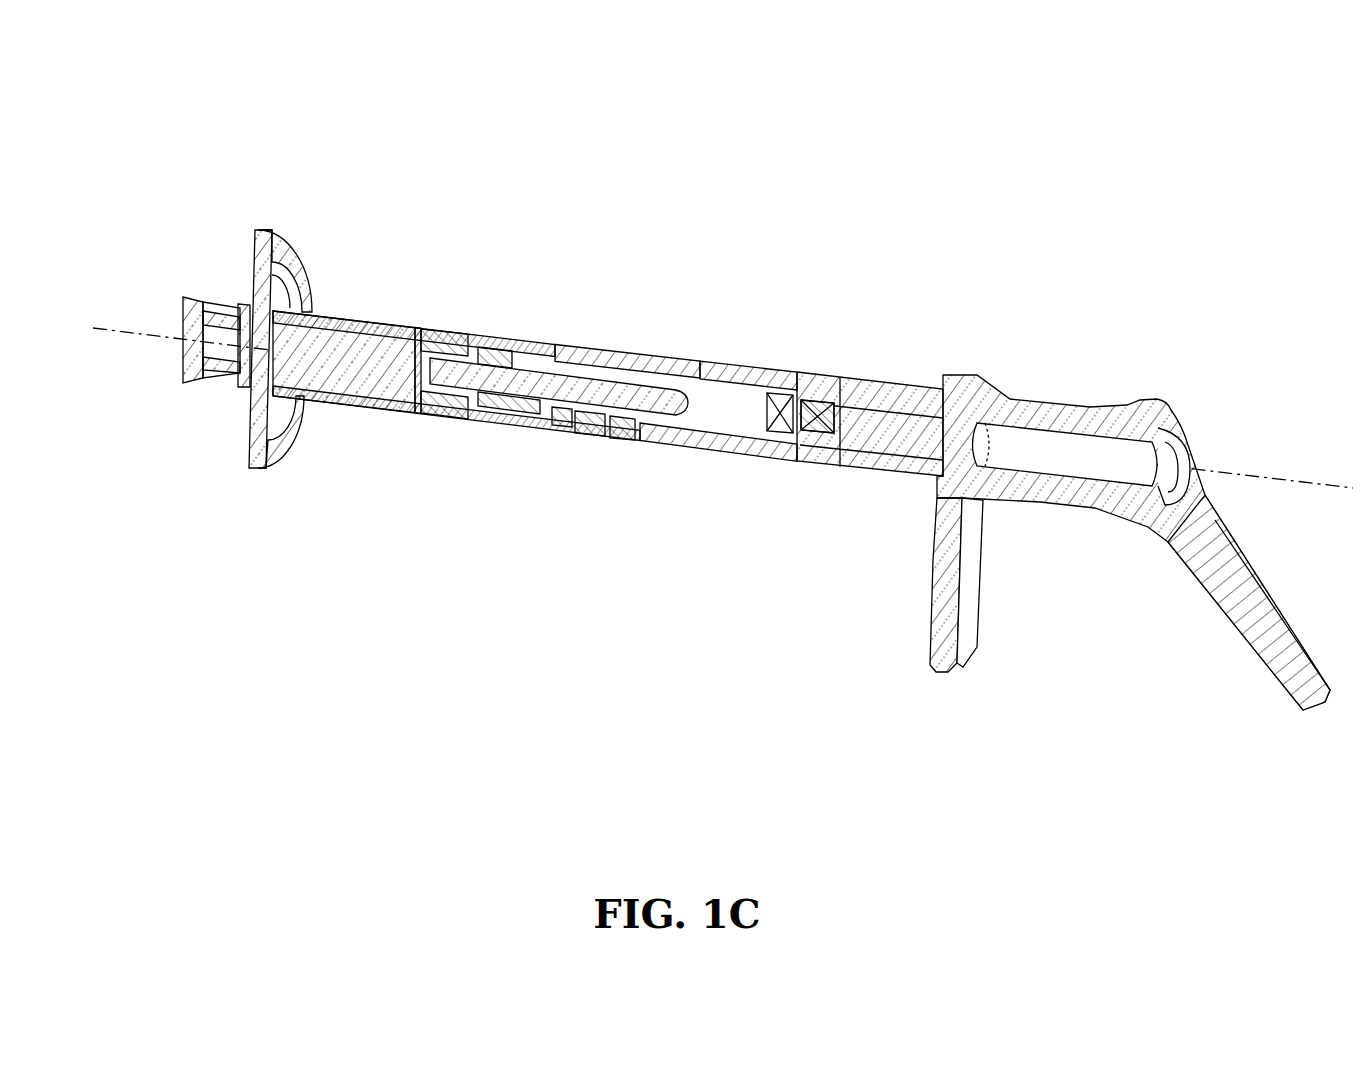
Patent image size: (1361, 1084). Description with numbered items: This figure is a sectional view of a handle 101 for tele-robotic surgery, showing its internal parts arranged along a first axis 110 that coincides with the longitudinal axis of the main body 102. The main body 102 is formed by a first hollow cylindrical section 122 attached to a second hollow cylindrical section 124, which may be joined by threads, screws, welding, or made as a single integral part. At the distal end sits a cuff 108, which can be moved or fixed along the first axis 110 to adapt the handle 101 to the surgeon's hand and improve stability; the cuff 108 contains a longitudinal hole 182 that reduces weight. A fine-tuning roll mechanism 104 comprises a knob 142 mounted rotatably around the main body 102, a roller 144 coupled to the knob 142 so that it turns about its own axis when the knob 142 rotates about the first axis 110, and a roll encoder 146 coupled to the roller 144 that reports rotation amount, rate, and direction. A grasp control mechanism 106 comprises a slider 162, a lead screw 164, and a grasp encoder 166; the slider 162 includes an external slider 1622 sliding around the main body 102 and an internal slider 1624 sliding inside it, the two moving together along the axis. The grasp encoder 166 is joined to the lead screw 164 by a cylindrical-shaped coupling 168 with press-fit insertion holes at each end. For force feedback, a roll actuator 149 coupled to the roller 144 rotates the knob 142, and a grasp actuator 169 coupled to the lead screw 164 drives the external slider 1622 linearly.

The handle 101 is at (317, 712).
The main body 102 is at (283, 130).
The fine-tuning roll mechanism 104 is at (628, 550).
The grasp control mechanism 106 is at (385, 517).
The cuff 108 is at (807, 347).
The first axis 110 is at (97, 330).
The first hollow cylindrical section 122 is at (745, 435).
The second hollow cylindrical section 124 is at (500, 333).
The knob 142 is at (705, 360).
The roller 144 is at (763, 407).
The roll encoder 146 is at (833, 437).
The roll actuator 149 is at (908, 452).
The slider 162 is at (553, 443).
The lead screw 164 is at (533, 408).
The grasp encoder 166 is at (420, 410).
The cylindrical-shaped coupling 168 is at (470, 345).
The grasp actuator 169 is at (343, 400).
The longitudinal hole 182 is at (1080, 486).
The external slider 1622 is at (623, 340).
The internal slider 1624 is at (535, 350).